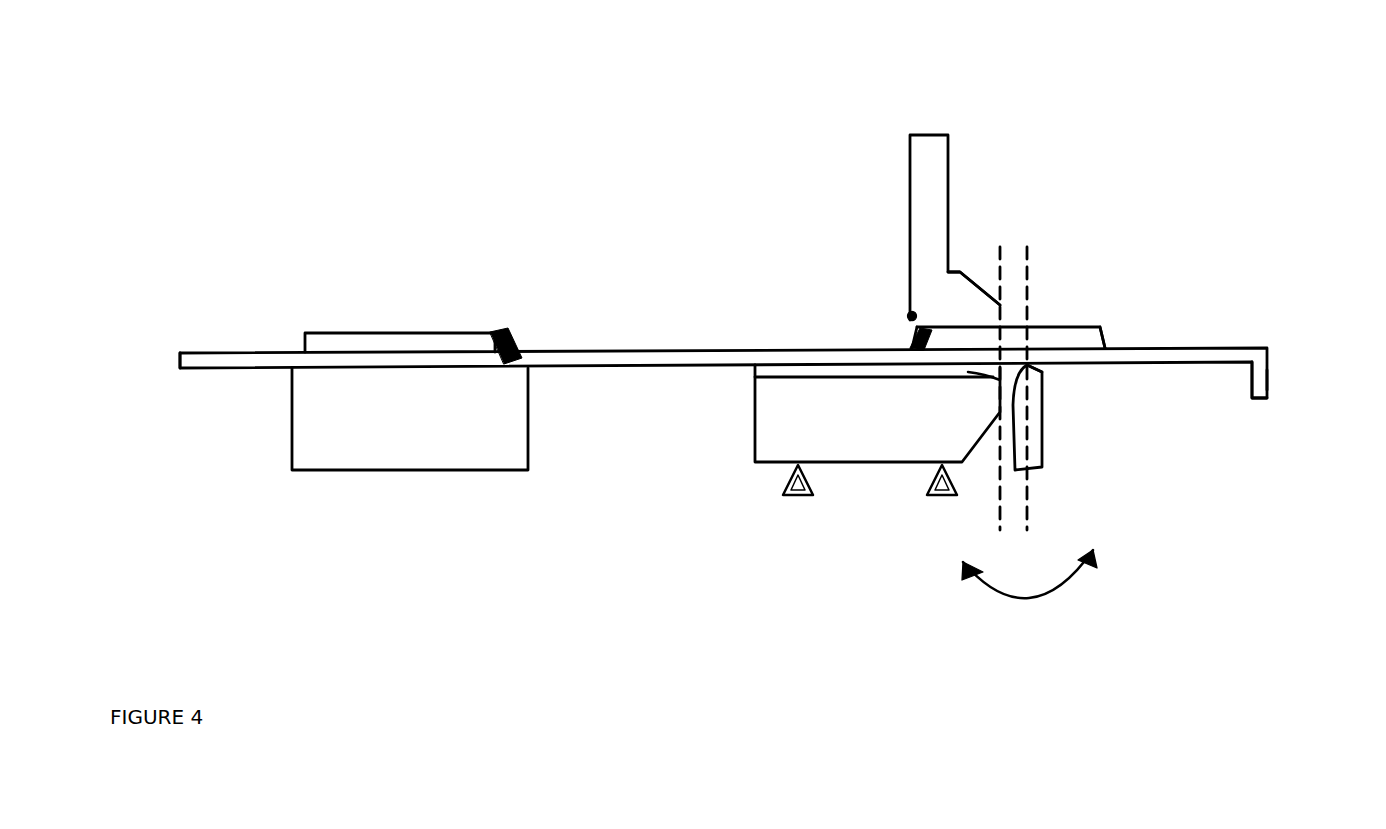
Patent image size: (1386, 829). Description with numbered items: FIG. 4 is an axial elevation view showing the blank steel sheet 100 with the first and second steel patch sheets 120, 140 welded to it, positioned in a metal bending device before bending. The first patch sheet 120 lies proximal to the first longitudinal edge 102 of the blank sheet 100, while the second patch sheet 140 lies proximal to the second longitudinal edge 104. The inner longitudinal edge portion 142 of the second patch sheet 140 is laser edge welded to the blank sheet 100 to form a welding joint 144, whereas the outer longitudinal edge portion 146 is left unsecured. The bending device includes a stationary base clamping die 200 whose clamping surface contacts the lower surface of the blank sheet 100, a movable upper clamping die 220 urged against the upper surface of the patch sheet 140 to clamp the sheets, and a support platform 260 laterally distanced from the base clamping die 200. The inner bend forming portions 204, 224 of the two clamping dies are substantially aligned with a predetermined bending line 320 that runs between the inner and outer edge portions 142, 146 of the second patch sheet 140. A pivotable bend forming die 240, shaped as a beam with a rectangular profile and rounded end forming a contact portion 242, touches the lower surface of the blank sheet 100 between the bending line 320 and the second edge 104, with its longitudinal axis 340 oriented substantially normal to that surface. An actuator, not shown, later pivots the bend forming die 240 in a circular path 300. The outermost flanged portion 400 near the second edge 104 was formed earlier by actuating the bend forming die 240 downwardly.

The blank steel sheet 100 is at (612, 352).
The first longitudinal edge 102 is at (174, 364).
The second longitudinal edge 104 is at (1253, 400).
The first steel patch sheet 120 is at (402, 328).
The second steel patch sheet 140 is at (1068, 325).
The inner longitudinal edge portion 142 is at (912, 315).
The welding joint 144 is at (915, 345).
The outer longitudinal edge portion 146 is at (1105, 327).
The base clamping die 200 is at (857, 418).
The inner bend forming portion 204 is at (1033, 367).
The upper clamping die 220 is at (925, 193).
The inner bend forming portion 224 is at (1000, 305).
The bend forming die 240 is at (1045, 462).
The contact portion 242 is at (1040, 373).
The support platform 260 is at (403, 430).
The circular path 300 is at (1030, 608).
The bending line 320 is at (998, 245).
The longitudinal axis 340 is at (1030, 247).
The outermost flanged portion 400 is at (1272, 380).